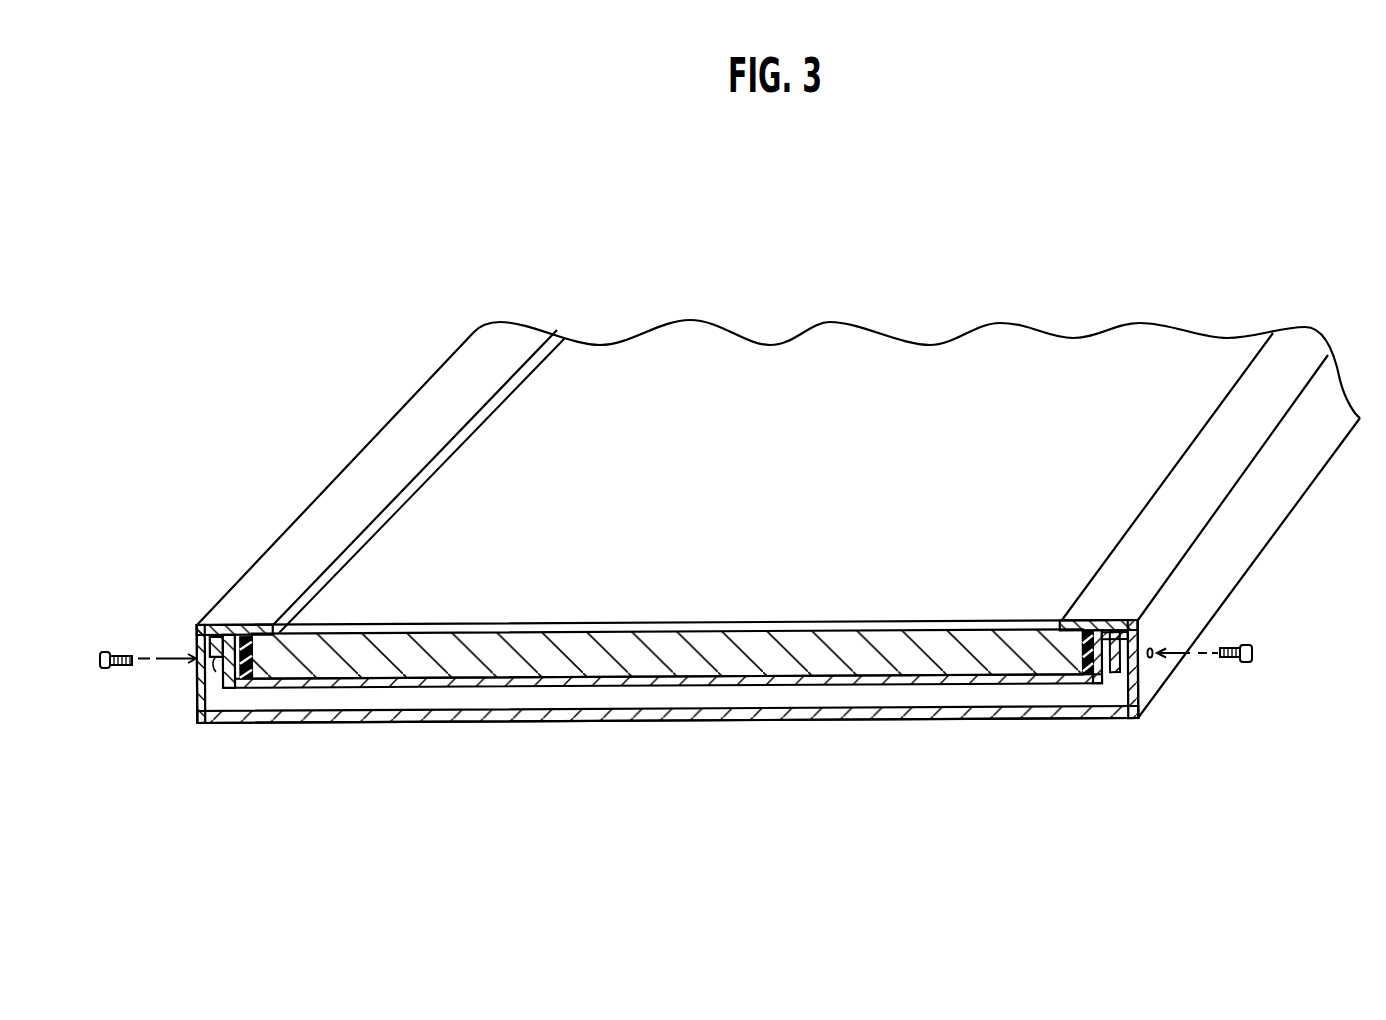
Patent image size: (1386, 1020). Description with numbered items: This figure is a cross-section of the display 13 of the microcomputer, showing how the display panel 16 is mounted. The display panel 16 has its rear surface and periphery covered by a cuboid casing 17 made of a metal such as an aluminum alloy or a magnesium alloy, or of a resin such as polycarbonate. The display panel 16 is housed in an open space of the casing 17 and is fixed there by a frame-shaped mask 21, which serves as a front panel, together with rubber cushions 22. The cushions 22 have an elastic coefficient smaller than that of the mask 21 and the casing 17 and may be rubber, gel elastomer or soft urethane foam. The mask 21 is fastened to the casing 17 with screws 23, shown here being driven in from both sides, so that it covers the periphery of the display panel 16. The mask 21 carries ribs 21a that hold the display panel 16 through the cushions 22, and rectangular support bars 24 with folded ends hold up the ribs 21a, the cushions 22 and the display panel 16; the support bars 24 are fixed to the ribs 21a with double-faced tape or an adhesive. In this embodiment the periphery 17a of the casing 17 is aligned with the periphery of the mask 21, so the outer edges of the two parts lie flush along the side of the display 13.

The display 13 is at (1092, 236).
The display panel 16 is at (840, 363).
The casing 17 is at (683, 724).
The periphery of the casing 17a is at (1240, 545).
The mask 21 is at (275, 580).
The ribs 21a is at (1093, 665).
The rubber cushions 22 is at (257, 658).
The screws 23 is at (103, 648).
The support bars 24 is at (907, 683).